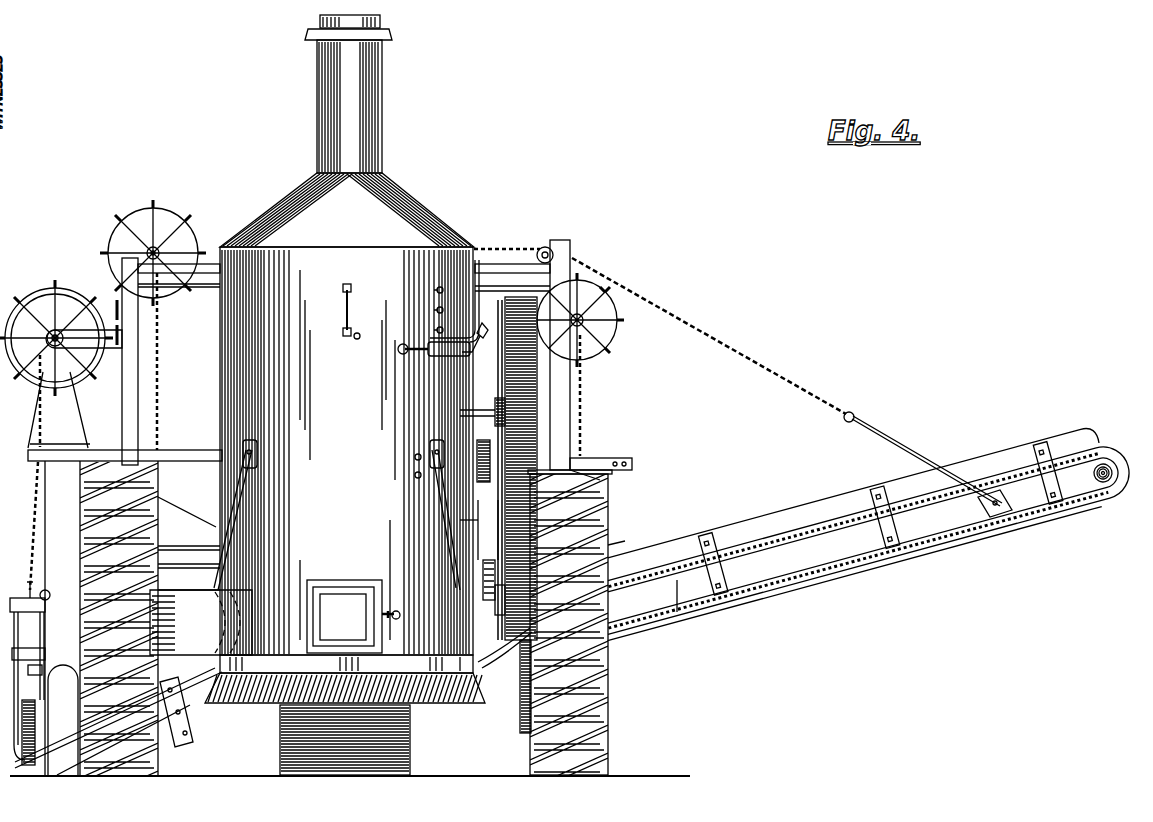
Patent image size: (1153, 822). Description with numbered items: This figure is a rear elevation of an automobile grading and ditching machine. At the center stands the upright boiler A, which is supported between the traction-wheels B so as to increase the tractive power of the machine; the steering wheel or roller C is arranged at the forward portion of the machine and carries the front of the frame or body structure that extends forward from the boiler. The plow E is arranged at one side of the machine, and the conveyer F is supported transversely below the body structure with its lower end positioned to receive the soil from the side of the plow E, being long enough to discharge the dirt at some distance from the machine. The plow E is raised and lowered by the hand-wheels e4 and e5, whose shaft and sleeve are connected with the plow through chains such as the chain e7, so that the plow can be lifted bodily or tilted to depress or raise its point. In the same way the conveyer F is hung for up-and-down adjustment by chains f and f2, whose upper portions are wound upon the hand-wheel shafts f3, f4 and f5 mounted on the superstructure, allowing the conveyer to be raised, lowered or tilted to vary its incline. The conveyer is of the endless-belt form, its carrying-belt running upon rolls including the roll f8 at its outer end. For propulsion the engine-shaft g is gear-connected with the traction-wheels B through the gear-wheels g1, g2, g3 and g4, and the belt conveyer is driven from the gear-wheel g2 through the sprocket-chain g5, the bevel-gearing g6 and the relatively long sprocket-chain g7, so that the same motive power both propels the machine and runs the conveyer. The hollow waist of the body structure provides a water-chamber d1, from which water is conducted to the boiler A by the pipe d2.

The upright boiler A is at (417, 219).
The traction-wheels B is at (84, 550).
The steering wheel or roller C is at (397, 753).
The plow E is at (37, 673).
The conveyer F is at (730, 523).
The water-chamber d1 is at (476, 526).
The pipe d2 is at (484, 346).
The hand-wheel e4 is at (35, 308).
The hand-wheel e5 is at (65, 322).
The chain e7 is at (32, 518).
The chain f is at (160, 374).
The chain f2 is at (700, 330).
The hand-wheel shaft f3 is at (610, 300).
The hand-wheel shaft f4 is at (582, 388).
The hand-wheel shaft f5 is at (165, 213).
The roll f8 is at (1106, 458).
The engine-shaft g is at (496, 408).
The gear-wheel g1 is at (482, 412).
The gear-wheel g2 is at (482, 440).
The gear-wheel g3 is at (478, 532).
The gear-wheel g4 is at (610, 548).
The sprocket-chain g5 is at (500, 468).
The bevel-gearing g6 is at (512, 640).
The sprocket-chain g7 is at (740, 600).